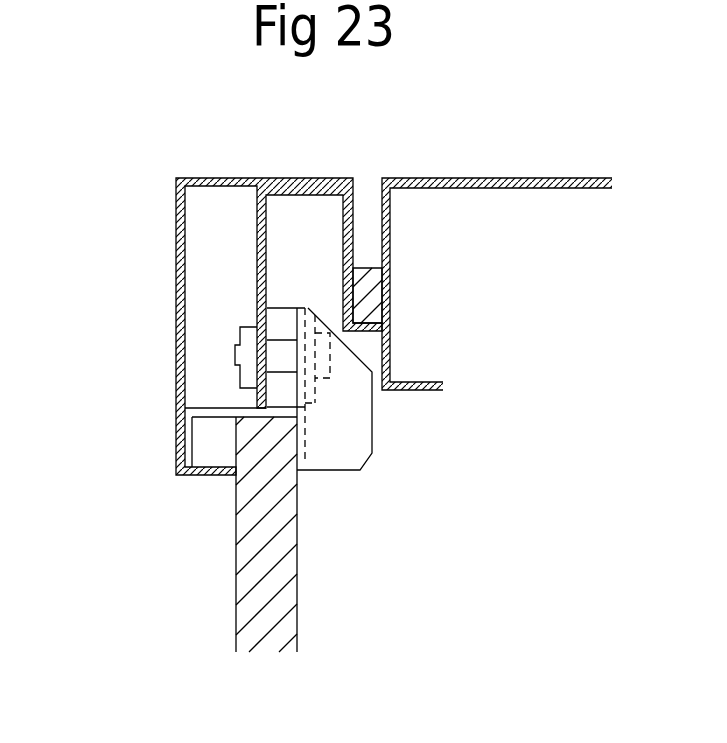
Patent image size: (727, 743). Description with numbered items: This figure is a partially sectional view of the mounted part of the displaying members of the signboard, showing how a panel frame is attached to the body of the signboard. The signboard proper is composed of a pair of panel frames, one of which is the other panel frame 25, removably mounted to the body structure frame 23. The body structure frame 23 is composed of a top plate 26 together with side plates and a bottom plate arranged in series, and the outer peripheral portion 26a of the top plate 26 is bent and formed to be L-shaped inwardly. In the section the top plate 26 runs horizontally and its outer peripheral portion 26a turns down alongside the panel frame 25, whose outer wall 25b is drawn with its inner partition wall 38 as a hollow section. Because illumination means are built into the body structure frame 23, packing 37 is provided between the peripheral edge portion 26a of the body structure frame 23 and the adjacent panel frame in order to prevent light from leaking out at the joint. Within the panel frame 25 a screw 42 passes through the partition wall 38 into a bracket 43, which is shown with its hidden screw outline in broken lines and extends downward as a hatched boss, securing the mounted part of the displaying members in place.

The body structure frame 23 is at (551, 176).
The other panel frame 25 is at (169, 278).
The side wall of housing 25b is at (175, 210).
The top plate 26 is at (462, 179).
The outer peripheral portion 26a is at (390, 268).
The packing 37 is at (365, 283).
The partition wall 38 is at (268, 283).
The screw 42 is at (246, 368).
The bracket 43 is at (353, 420).